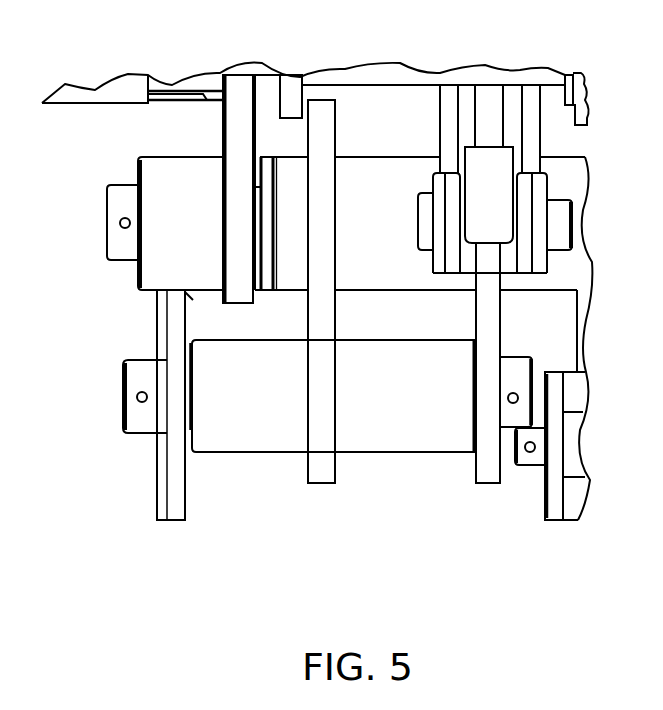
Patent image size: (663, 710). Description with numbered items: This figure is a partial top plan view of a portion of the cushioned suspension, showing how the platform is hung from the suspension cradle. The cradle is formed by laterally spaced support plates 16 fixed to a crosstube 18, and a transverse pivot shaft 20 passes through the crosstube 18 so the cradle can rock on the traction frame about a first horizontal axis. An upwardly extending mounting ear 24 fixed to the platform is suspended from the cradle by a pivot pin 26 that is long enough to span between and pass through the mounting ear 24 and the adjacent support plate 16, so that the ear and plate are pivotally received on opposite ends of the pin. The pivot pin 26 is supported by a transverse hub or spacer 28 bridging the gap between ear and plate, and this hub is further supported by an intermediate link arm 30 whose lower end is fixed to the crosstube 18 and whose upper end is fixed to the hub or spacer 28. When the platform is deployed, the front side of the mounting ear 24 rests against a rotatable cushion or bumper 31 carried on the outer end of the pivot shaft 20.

The support plate 16 is at (488, 322).
The crosstube 18 is at (367, 203).
The pivot shaft 20 is at (107, 212).
The mounting ear 24 is at (175, 476).
The pivot pin 26 is at (123, 403).
The hub or spacer 28 is at (373, 435).
The intermediate link arm 30 is at (323, 317).
The rotatable cushion or bumper 31 is at (160, 172).